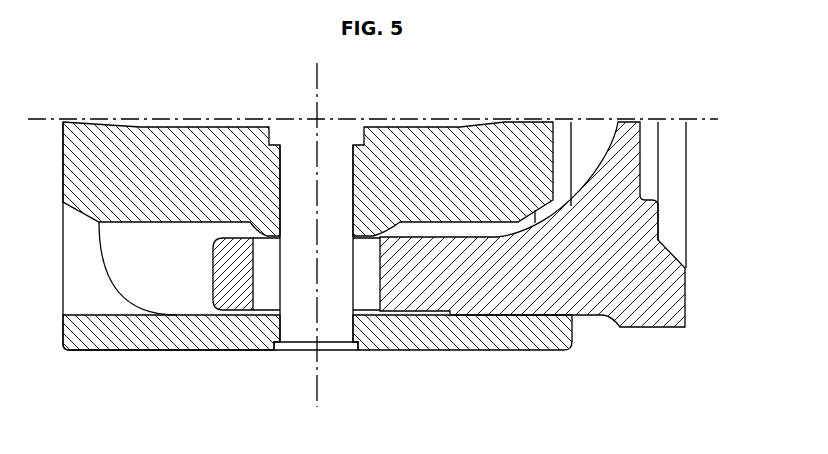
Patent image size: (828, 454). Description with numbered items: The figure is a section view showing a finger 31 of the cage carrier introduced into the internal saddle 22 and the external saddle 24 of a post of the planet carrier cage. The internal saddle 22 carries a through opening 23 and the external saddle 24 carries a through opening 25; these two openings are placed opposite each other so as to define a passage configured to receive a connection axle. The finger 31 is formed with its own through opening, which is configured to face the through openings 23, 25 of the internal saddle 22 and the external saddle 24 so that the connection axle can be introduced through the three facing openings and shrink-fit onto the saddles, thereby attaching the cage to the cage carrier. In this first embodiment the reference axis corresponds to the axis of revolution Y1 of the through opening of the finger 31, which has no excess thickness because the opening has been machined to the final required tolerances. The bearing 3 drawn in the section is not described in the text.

The bearing 3 is at (257, 279).
The internal saddle 22 is at (482, 162).
The through opening 23 is at (348, 167).
The external saddle 24 is at (435, 333).
The through opening 25 is at (348, 327).
The finger 31 is at (497, 272).
The axis of revolution Y1 is at (317, 393).